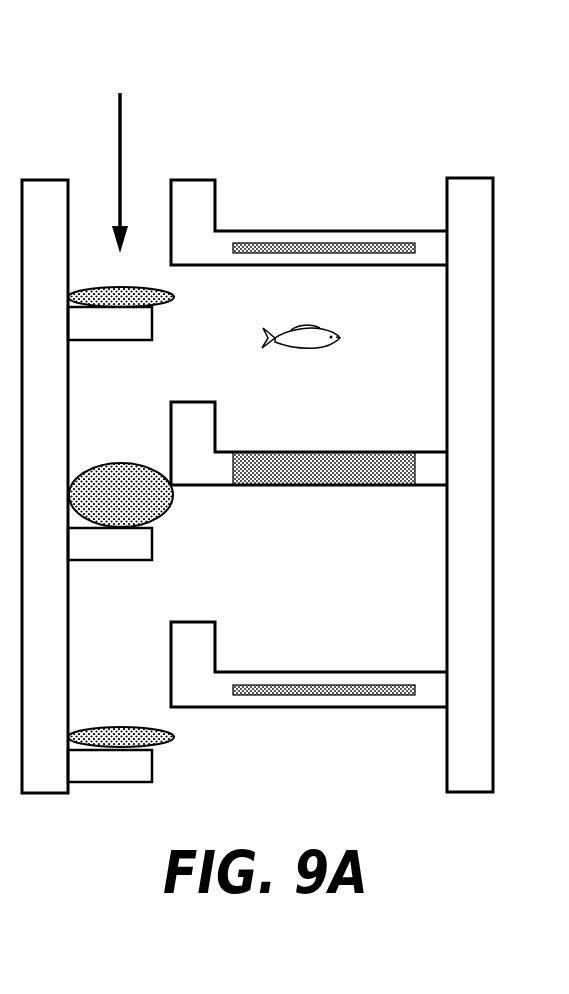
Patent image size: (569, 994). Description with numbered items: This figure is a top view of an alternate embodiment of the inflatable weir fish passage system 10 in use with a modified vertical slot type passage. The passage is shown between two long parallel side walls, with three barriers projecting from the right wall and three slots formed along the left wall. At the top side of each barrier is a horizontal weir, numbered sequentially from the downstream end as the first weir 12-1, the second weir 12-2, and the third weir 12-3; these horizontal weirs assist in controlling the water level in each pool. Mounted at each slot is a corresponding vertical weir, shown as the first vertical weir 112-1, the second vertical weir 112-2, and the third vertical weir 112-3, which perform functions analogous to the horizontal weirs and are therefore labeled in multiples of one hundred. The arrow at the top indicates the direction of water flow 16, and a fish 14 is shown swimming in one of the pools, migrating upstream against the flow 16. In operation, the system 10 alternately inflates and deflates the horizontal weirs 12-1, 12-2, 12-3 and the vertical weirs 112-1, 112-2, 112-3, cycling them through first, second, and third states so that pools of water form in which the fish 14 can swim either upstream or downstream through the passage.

The fish passage system 10 is at (283, 140).
The direction of water flow 16 is at (120, 120).
The fish 14 is at (310, 350).
The first weir 12-1 is at (337, 244).
The second weir 12-2 is at (318, 468).
The third weir 12-3 is at (318, 684).
The first vertical weir 112-1 is at (174, 298).
The second vertical weir 112-2 is at (173, 497).
The third vertical weir 112-3 is at (174, 737).